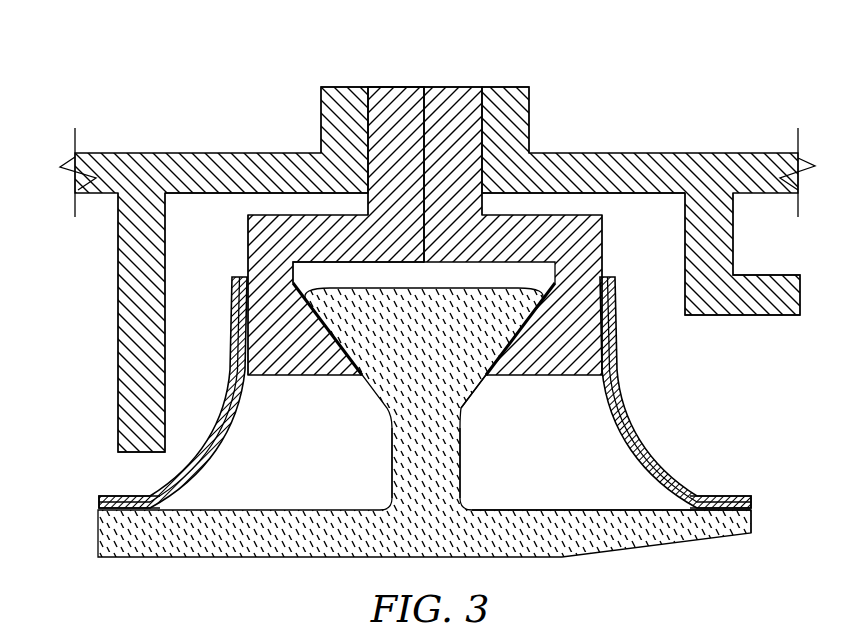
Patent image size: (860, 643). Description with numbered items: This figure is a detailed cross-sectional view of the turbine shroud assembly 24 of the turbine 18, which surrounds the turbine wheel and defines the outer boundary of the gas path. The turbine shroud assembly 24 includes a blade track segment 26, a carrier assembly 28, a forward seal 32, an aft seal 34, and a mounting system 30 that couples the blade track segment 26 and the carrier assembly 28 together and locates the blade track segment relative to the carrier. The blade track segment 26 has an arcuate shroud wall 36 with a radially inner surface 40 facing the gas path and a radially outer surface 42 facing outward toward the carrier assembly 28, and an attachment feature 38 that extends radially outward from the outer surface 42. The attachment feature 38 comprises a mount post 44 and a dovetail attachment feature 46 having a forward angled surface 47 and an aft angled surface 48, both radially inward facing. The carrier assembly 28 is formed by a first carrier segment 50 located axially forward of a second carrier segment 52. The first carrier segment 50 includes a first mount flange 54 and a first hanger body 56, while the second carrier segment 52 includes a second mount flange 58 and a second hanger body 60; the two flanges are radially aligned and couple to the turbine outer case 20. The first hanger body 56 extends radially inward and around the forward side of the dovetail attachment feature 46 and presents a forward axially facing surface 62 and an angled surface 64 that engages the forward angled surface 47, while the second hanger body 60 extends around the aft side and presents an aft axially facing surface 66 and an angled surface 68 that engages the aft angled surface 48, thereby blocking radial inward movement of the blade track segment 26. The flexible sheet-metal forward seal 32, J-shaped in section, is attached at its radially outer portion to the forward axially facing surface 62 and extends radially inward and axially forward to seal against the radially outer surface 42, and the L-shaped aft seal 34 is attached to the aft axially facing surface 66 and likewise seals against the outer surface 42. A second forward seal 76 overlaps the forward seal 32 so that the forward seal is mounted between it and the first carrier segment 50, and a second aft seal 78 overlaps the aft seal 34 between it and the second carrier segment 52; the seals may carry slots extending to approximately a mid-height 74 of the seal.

The turbine 18 is at (722, 82).
The turbine outer case 20 is at (722, 152).
The turbine shroud assembly 24 is at (578, 98).
The blade track segment 26 is at (662, 568).
The carrier assembly 28 is at (578, 200).
The mounting system 30 is at (535, 80).
The forward seal 32 is at (238, 412).
The aft seal 34 is at (645, 448).
The shroud wall 36 is at (745, 527).
The attachment feature 38 is at (474, 443).
The radially inner surface 40 is at (155, 558).
The radially outer surface 42 is at (580, 508).
The mount post 44 is at (392, 458).
The dovetail attachment feature 46 is at (413, 330).
The forward angled surface 47 is at (388, 400).
The aft angled surface 48 is at (470, 396).
The first carrier segment 50 is at (238, 222).
The second carrier segment 52 is at (614, 249).
The first mount flange 54 is at (402, 104).
The first hanger body 56 is at (296, 232).
The second mount flange 58 is at (456, 104).
The second hanger body 60 is at (597, 230).
The forward axially facing surface 62 is at (248, 265).
The angled surface 64 is at (316, 294).
The aft axially facing surface 66 is at (603, 267).
The angled surface 68 is at (540, 292).
The mid-height 74 is at (222, 402).
The second forward seal 76 is at (173, 485).
The second aft seal 78 is at (733, 494).